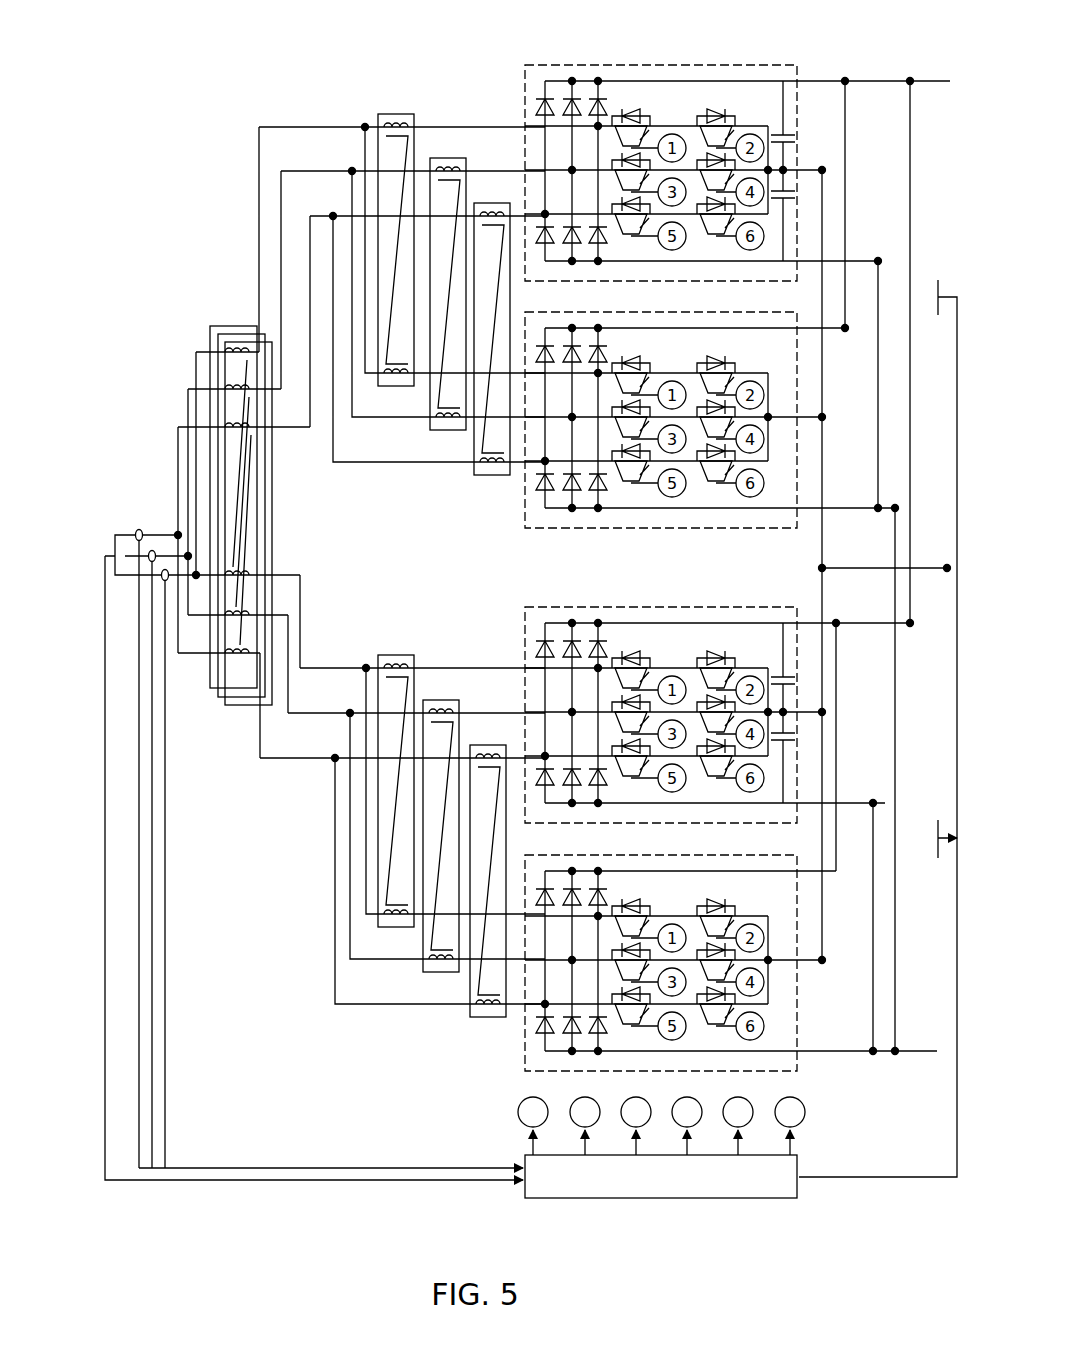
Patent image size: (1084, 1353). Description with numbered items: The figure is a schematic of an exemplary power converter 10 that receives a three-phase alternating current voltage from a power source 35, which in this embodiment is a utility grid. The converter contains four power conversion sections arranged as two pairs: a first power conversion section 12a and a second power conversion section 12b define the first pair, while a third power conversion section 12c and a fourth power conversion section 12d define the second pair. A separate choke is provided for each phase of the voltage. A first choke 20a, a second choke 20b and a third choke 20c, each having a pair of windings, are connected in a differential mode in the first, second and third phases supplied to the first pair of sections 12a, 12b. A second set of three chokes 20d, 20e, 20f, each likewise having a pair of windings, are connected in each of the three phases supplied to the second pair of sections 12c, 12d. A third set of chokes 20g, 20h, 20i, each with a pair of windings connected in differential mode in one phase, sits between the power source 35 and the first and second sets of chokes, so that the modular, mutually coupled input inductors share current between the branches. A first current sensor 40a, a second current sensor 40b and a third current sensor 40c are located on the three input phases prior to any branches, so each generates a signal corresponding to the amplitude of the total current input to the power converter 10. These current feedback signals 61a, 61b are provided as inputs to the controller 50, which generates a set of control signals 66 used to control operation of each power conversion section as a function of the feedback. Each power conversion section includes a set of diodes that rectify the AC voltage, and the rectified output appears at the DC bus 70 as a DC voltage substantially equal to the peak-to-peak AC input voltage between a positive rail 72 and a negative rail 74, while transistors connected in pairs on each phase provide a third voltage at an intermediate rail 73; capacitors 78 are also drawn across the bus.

The power converter 10 is at (163, 48).
The first power conversion section 12a is at (800, 992).
The second power conversion section 12b is at (800, 770).
The third power conversion section 12c is at (800, 380).
The fourth power conversion section 12d is at (712, 66).
The first choke 20a is at (395, 655).
The second choke 20b is at (440, 700).
The third choke 20c is at (488, 745).
The choke 20d is at (395, 113).
The choke 20e is at (440, 157).
The choke 20f is at (490, 202).
The choke 20g is at (214, 326).
The choke 20h is at (248, 333).
The choke 20i is at (277, 367).
The power source 35 is at (83, 518).
The first current sensor 40a is at (135, 527).
The second current sensor 40b is at (156, 548).
The third current sensor 40c is at (160, 588).
The controller 50 is at (665, 1200).
The current feedback signal 61a is at (322, 1166).
The current feedback signal 61b is at (322, 1182).
The control signals 66 is at (803, 1130).
The DC bus 70 is at (872, 595).
The positive rail 72 is at (868, 79).
The intermediate rail 73 is at (928, 566).
The negative rail 74 is at (926, 1049).
The DC link capacitor 78 is at (793, 133).